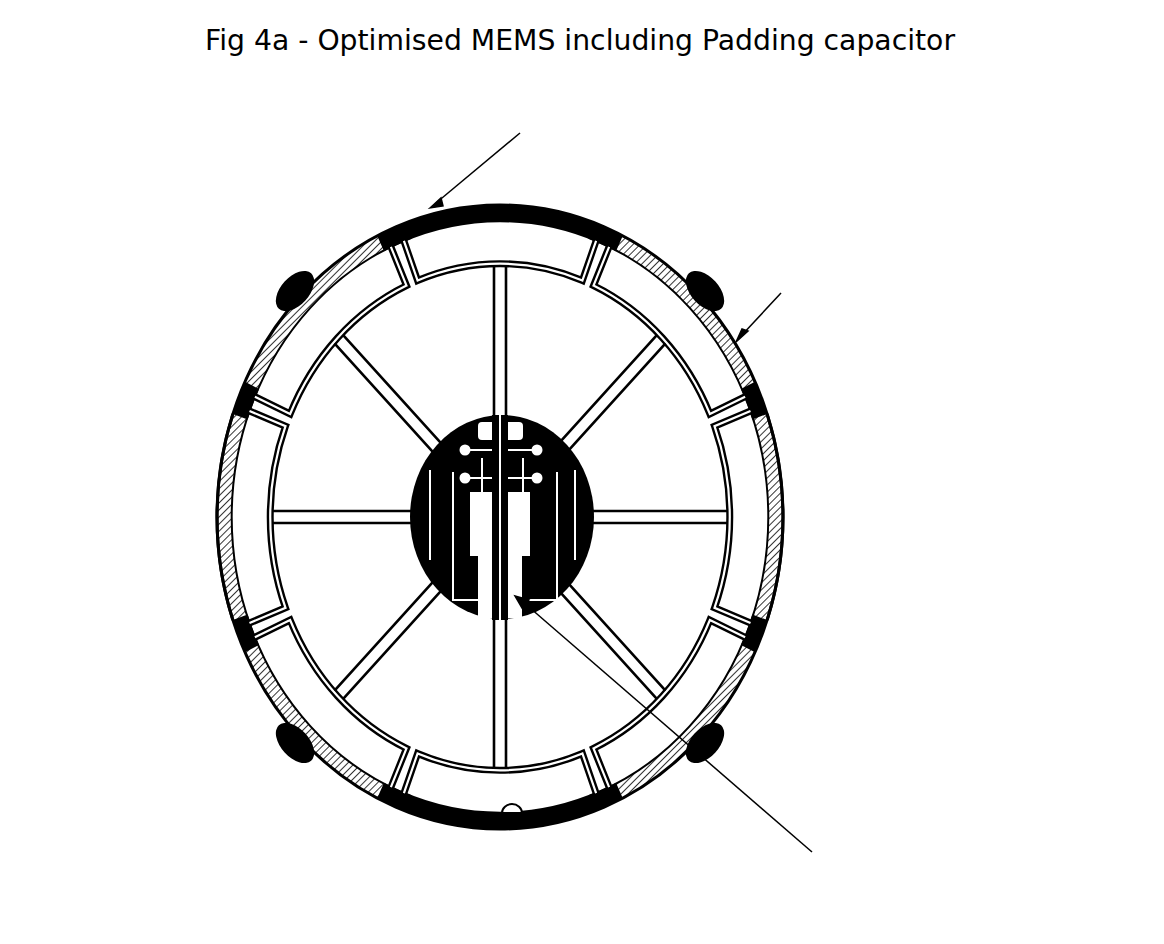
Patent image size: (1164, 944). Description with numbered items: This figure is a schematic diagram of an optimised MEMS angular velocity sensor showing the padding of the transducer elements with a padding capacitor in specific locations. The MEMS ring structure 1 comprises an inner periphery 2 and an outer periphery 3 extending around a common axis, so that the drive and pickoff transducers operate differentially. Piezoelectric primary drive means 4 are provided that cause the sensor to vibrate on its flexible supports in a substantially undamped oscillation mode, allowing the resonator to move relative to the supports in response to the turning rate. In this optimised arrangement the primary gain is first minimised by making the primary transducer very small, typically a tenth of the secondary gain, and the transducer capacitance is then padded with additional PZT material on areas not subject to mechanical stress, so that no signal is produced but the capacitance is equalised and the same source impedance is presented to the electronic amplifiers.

The MEMS ring structure 1 is at (616, 500).
The inner periphery 2 is at (519, 829).
The outer periphery 3 is at (490, 831).
The piezoelectric primary drive means 4 is at (803, 460).